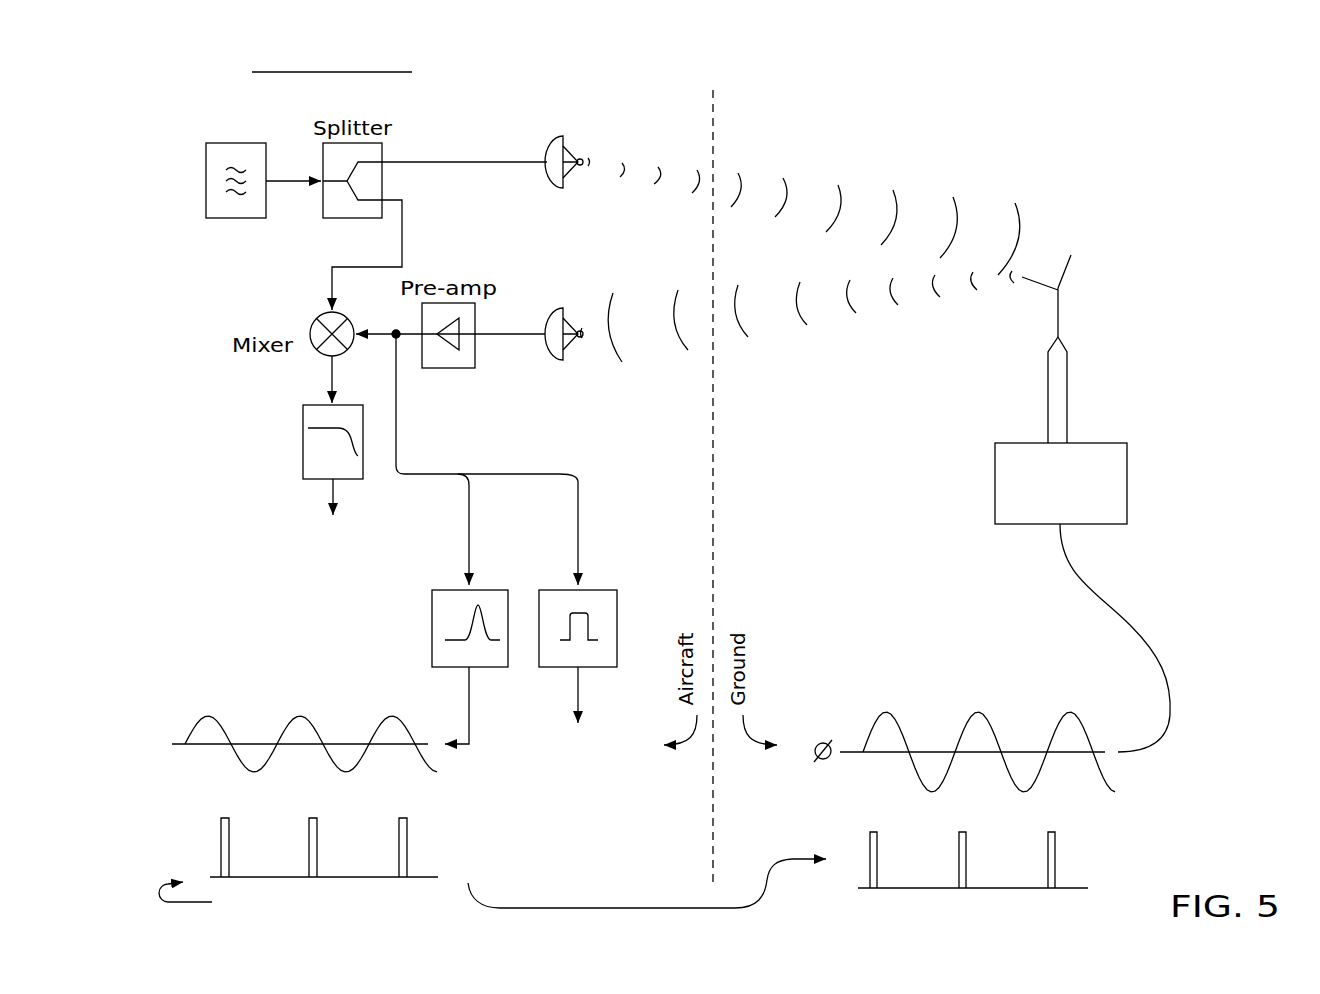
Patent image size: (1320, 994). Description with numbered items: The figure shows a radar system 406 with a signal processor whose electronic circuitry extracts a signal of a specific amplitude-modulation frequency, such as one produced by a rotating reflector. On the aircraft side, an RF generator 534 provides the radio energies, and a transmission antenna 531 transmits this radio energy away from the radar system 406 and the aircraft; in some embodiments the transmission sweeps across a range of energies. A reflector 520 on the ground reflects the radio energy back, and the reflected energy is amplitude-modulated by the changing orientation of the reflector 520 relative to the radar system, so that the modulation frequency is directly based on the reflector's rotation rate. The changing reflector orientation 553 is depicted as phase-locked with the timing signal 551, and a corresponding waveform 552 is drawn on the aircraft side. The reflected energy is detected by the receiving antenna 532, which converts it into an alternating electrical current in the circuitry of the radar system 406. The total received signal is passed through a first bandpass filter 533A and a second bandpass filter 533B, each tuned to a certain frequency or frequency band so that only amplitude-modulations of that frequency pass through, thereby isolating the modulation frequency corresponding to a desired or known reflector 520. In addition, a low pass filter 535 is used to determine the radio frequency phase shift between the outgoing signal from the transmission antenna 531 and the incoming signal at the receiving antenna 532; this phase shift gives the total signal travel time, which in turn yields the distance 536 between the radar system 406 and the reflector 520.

The radar system 406 is at (428, 64).
The RF generator 534 is at (221, 143).
The transmission antenna 531 is at (556, 196).
The receiving antenna 532 is at (556, 372).
The low pass filter 535 is at (303, 440).
The distance 536 is at (368, 556).
The first bandpass filter 533A is at (432, 623).
The second bandpass filter 533B is at (617, 628).
The aircraft reference signal 552 is at (210, 716).
The changing reflector orientation 553 is at (980, 712).
The timing signal 551 is at (410, 912).
The reflector 520 is at (1065, 272).